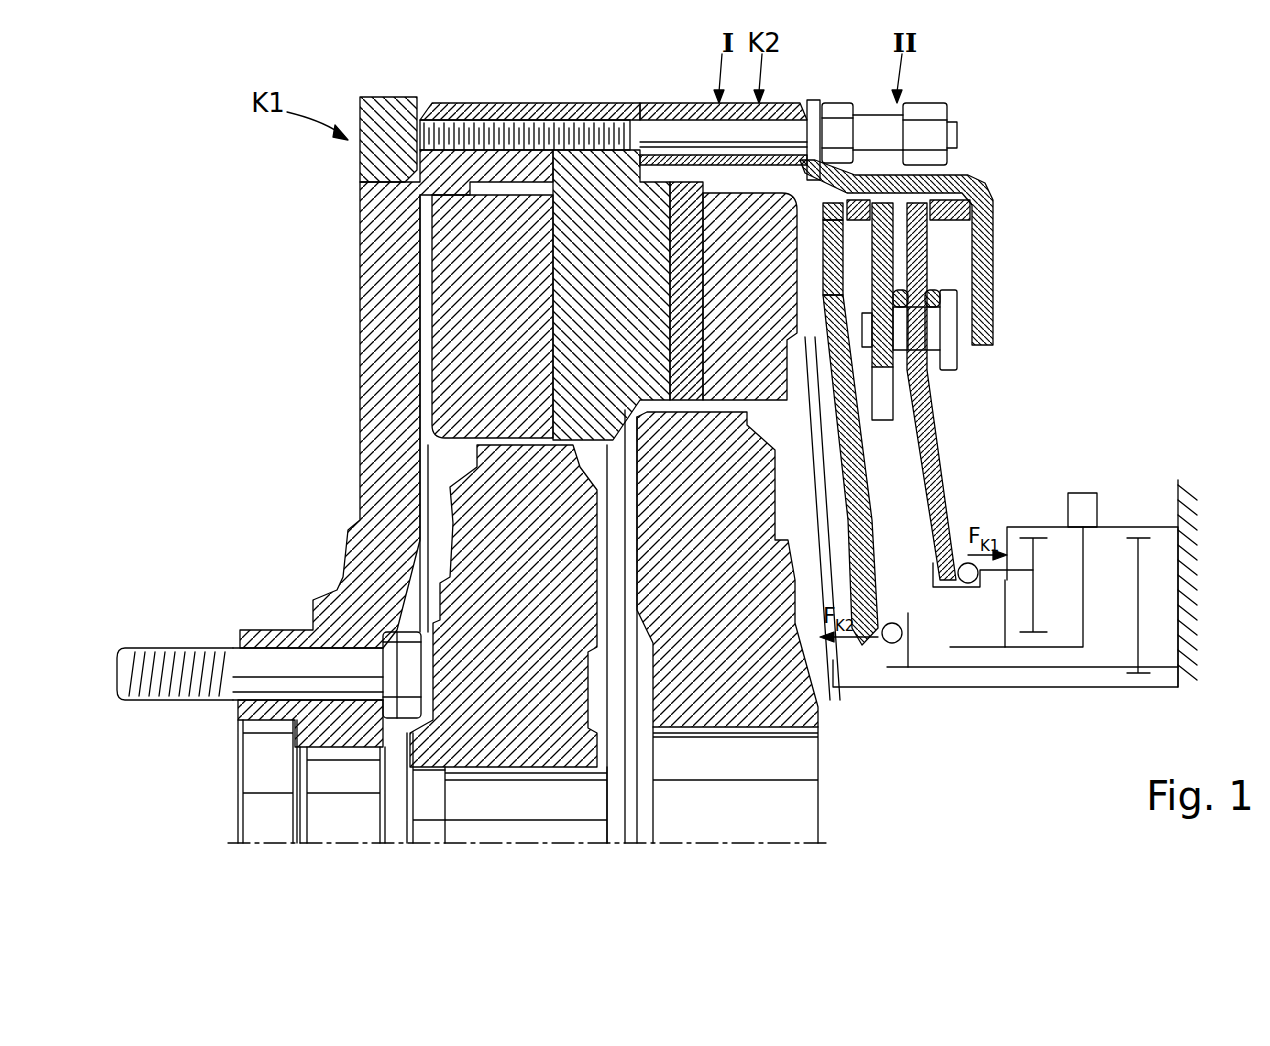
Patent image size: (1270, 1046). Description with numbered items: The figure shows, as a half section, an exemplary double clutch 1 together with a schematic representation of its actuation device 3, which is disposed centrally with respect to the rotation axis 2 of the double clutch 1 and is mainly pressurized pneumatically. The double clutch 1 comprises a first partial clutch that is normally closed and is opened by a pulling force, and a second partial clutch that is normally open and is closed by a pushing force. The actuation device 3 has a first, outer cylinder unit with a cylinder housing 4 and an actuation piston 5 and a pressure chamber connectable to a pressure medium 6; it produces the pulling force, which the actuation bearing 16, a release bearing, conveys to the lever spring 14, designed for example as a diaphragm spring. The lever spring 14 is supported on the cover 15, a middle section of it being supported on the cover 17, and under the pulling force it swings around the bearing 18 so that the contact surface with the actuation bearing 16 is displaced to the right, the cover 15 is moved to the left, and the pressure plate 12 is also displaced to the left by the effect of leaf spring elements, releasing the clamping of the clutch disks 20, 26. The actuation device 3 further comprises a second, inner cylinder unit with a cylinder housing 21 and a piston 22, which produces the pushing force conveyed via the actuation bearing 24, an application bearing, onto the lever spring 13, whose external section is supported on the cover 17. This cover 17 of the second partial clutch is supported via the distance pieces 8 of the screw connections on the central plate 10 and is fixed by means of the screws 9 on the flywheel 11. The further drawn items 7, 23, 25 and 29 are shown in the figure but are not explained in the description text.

The double clutch 1 is at (1135, 180).
The rotation axis 2 is at (833, 841).
The actuation device 3 is at (1085, 430).
The cylinder housing 4 is at (1122, 527).
The actuation piston 5 is at (997, 572).
The pressure medium 6 is at (1012, 515).
The reservoir connection 7 is at (1078, 482).
The distance pieces 8 is at (680, 104).
The screws 9 is at (785, 136).
The central plate 10 is at (590, 104).
The flywheel 11 is at (455, 104).
The pressure plate 12 is at (468, 330).
The lever spring 13 is at (870, 556).
The lever spring 14 is at (935, 432).
The cover 15 is at (985, 256).
The actuation bearing 16 is at (945, 625).
The cover 17 is at (858, 120).
The bearing 18 is at (950, 320).
The clutch disk 20 is at (468, 553).
The cylinder housing 21 is at (1045, 650).
The piston 22 is at (1108, 667).
The fixed support 23 is at (1163, 508).
The actuation bearing 24 is at (893, 652).
The spring plate 25 is at (805, 305).
The clutch disk 26 is at (725, 615).
The fastening screw 29 is at (137, 660).